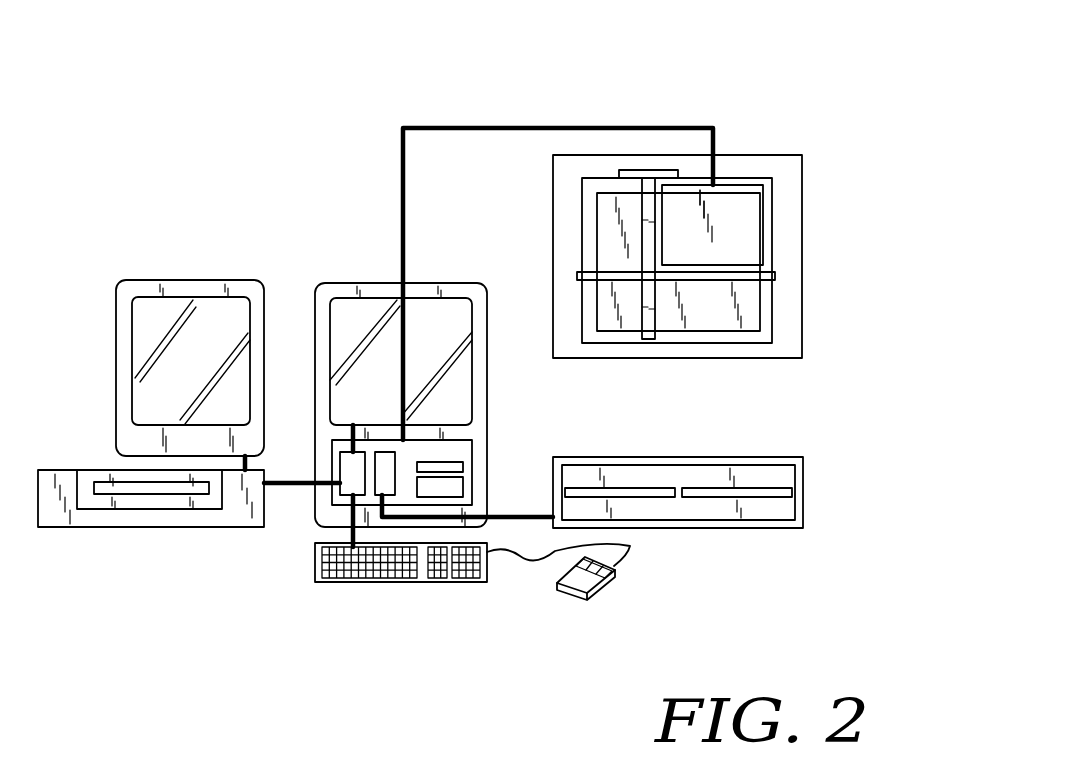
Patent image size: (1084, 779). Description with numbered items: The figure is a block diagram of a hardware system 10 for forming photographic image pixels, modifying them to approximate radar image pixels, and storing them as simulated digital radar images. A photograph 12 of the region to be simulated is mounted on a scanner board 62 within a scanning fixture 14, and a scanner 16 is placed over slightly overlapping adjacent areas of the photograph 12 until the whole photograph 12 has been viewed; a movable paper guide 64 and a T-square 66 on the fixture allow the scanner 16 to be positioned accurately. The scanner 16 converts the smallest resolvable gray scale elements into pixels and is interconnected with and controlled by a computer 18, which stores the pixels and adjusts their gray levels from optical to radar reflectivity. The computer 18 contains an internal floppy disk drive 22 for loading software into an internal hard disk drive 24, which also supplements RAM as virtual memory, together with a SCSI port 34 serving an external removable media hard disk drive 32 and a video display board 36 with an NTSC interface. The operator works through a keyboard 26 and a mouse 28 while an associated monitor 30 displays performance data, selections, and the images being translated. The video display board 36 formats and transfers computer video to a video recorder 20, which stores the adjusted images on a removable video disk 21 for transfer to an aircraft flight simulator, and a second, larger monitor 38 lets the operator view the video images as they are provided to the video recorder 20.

The system 10 is at (237, 158).
The photograph 12 is at (720, 320).
The scanning fixture 14 is at (638, 220).
The scanner 16 is at (722, 197).
The computer 18 is at (456, 449).
The video recorder 20 is at (146, 505).
The video disk 21 is at (123, 426).
The internal floppy disk drive 22 is at (452, 467).
The internal hard disk drive 24 is at (450, 493).
The keyboard 26 is at (318, 560).
The mouse 28 is at (597, 590).
The monitor 30 is at (452, 295).
The external removable media hard disk drive 32 is at (770, 518).
The SCSI port 34 is at (383, 483).
The video display board 36 is at (353, 487).
The monitor 38 is at (185, 278).
The scanner board 62 is at (602, 163).
The movable paper guide 64 is at (612, 272).
The T-square 66 is at (647, 165).